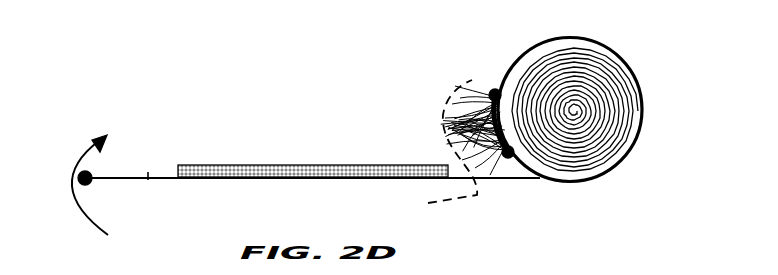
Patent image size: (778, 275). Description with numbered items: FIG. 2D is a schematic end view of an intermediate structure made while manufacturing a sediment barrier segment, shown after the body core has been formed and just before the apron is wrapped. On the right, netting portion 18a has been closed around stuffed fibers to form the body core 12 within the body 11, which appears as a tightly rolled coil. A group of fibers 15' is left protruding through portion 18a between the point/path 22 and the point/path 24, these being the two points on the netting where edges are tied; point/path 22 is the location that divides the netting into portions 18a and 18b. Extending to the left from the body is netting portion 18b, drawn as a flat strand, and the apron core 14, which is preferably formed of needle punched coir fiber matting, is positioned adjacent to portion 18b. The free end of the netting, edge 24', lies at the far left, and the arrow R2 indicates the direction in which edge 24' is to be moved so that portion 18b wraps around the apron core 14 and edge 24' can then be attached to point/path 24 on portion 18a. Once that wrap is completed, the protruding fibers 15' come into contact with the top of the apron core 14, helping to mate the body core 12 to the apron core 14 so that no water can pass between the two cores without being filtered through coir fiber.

The body 11 is at (640, 68).
The body core 12 is at (613, 107).
The apron core 14 is at (295, 165).
The group of fibers 15' is at (431, 147).
The portion of netting 18a is at (510, 63).
The portion of netting 18b is at (148, 178).
The point/path 22 is at (508, 158).
The point/path 24 is at (457, 119).
The edge 24' is at (52, 201).
The arrow R2 is at (78, 152).